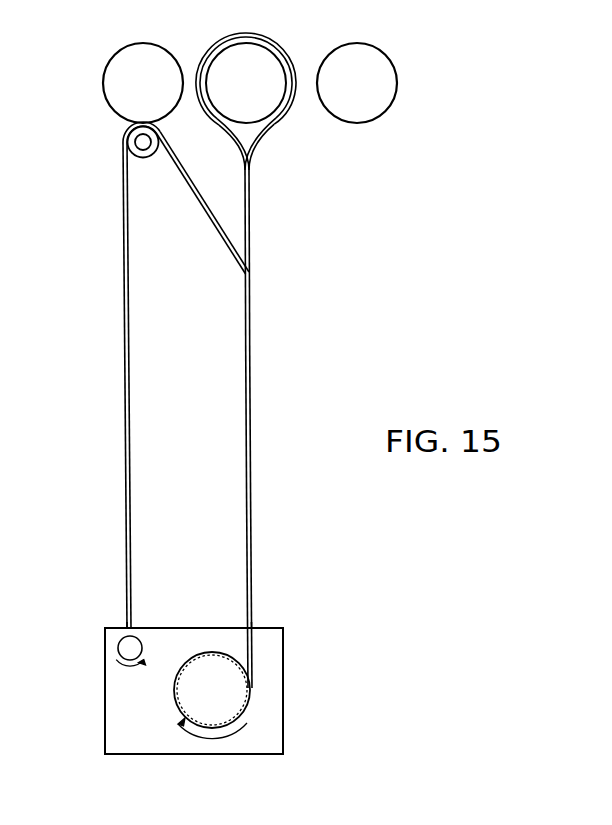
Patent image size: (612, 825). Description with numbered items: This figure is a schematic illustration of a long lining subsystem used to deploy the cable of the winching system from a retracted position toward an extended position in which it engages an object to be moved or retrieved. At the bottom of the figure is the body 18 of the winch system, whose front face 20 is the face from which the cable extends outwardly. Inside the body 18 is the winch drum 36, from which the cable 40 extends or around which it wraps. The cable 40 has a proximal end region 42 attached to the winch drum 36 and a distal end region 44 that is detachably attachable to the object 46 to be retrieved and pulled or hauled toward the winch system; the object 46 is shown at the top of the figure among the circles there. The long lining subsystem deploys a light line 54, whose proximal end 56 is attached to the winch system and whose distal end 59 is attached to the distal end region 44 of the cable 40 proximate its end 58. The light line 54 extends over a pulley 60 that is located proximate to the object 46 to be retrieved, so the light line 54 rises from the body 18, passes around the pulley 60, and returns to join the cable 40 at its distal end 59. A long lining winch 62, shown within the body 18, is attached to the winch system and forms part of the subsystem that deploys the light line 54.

The body 18 is at (104, 723).
The front face 20 is at (283, 687).
The winch drum 36 is at (221, 699).
The cable 40 is at (252, 375).
The proximal end region 42 is at (255, 575).
The distal end region 44 is at (252, 315).
The object 46 is at (248, 126).
The light line 54 is at (125, 462).
The proximal end 56 is at (127, 623).
The end 58 is at (250, 146).
The distal end 59 is at (243, 273).
The pulley 60 is at (142, 158).
The long lining winch 62 is at (117, 650).